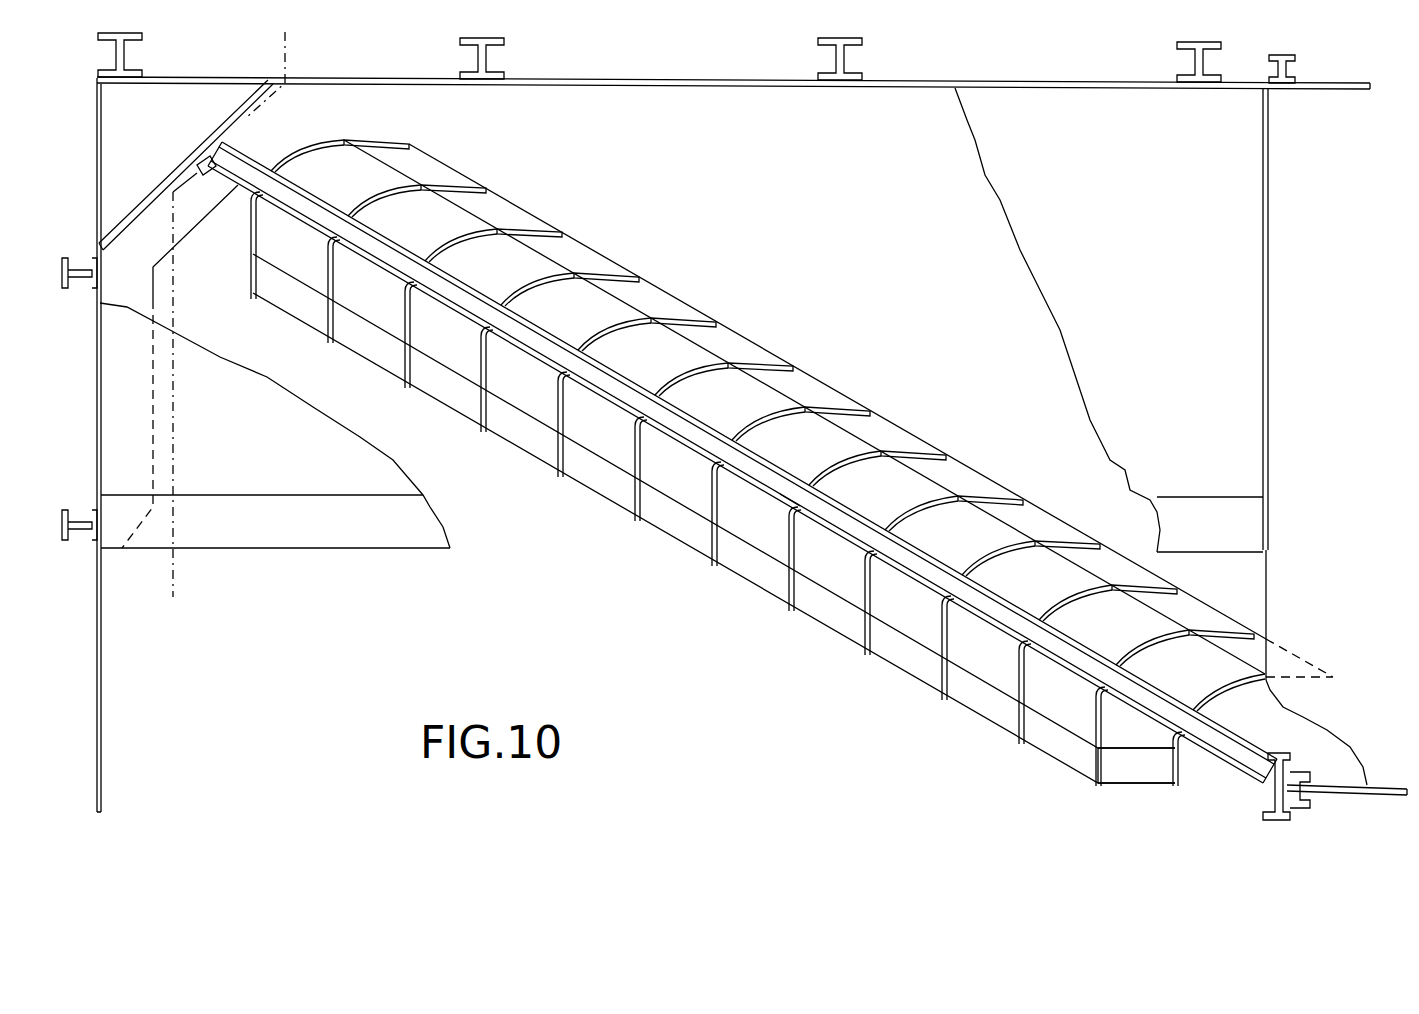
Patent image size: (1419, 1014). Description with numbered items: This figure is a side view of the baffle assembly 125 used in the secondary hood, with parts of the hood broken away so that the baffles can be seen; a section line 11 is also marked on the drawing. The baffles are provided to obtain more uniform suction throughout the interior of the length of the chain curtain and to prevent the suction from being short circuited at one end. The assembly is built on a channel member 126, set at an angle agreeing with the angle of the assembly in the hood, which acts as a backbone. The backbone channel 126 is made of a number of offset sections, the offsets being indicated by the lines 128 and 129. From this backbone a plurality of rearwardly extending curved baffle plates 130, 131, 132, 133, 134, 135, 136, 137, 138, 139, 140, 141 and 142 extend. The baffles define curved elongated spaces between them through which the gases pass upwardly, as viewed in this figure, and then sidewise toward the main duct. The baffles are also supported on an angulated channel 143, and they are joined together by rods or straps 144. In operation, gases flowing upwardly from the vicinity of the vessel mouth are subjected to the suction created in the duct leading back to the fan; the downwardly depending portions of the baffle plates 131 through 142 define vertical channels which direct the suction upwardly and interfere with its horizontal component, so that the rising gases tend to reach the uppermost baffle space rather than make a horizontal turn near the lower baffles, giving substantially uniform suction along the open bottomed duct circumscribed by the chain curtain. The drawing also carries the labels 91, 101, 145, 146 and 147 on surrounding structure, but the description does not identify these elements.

The section line 11- 11 is at (308, 28).
The ceiling plate 91 is at (803, 90).
The I-beam hanger 101 is at (858, 60).
The baffle assembly 125 is at (918, 359).
The channel member 126 is at (1233, 775).
The offset line 128 is at (895, 548).
The offset line 129 is at (792, 484).
The curved baffle plate 130 is at (1176, 788).
The curved baffle plate 131 is at (1098, 788).
The curved baffle plate 132 is at (1021, 746).
The curved baffle plate 133 is at (944, 701).
The curved baffle plate 134 is at (867, 657).
The curved baffle plate 135 is at (791, 613).
The curved baffle plate 136 is at (714, 568).
The curved baffle plate 137 is at (637, 523).
The curved baffle plate 138 is at (560, 479).
The curved baffle plate 139 is at (483, 434).
The curved baffle plate 140 is at (407, 389).
The curved baffle plate 141 is at (330, 344).
The curved baffle plate 142 is at (253, 300).
The angulated channel 143 is at (1083, 717).
The rods or straps 144 is at (1125, 556).
The longitudinal rod 145 is at (1077, 567).
The front panel strip 146 is at (982, 656).
The bottom edge member 147 is at (975, 722).